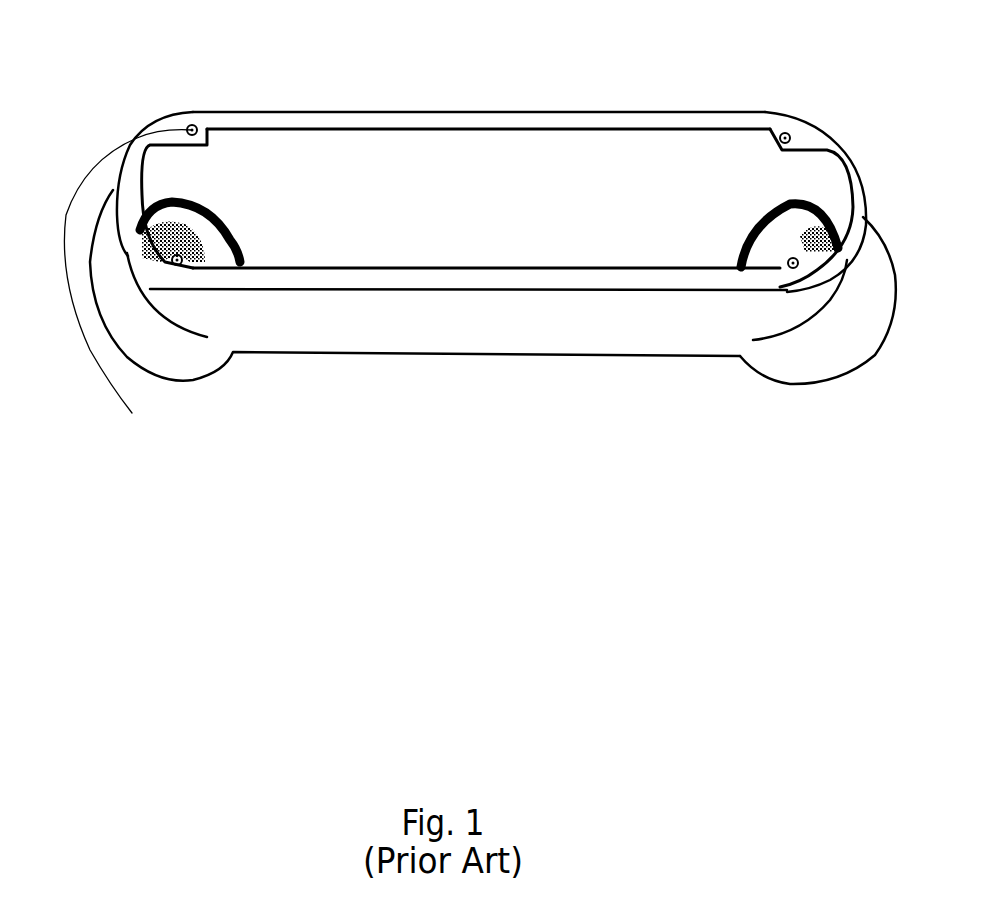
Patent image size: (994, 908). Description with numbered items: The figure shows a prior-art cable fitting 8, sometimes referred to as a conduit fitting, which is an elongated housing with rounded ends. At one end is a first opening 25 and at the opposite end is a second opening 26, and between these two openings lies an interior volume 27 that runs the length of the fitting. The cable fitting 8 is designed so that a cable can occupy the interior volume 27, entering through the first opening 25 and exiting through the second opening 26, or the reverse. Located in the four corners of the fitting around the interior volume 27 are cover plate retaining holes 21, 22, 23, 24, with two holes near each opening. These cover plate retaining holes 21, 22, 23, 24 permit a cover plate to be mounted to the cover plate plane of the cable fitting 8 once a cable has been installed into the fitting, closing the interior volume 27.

The cable fitting 8 is at (613, 340).
The cover plate retaining hole 21 is at (142, 304).
The cover plate retaining hole 22 is at (484, 254).
The cover plate retaining hole 23 is at (132, 413).
The cover plate retaining hole 24 is at (475, 335).
The first opening 25 is at (170, 226).
The second opening 26 is at (810, 240).
The interior volume 27 is at (497, 208).